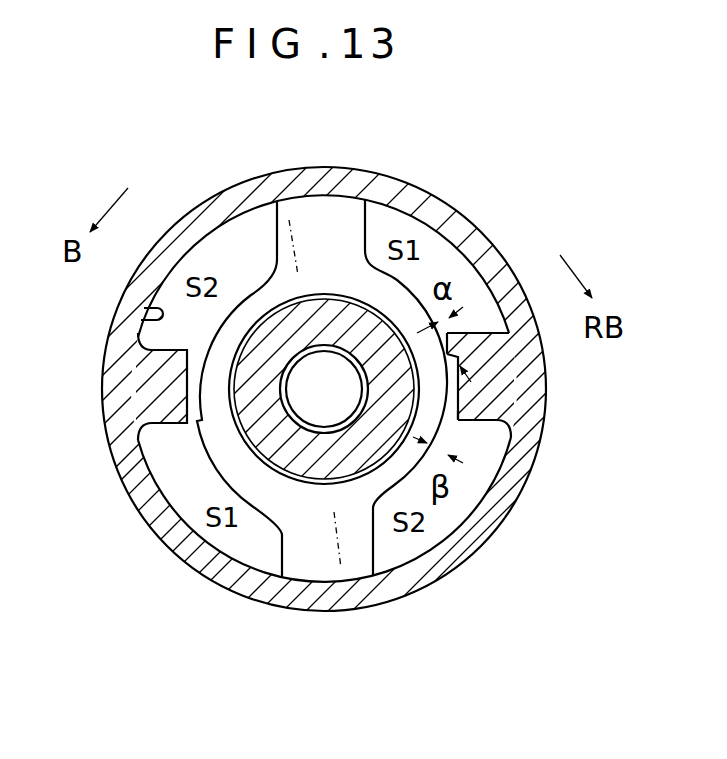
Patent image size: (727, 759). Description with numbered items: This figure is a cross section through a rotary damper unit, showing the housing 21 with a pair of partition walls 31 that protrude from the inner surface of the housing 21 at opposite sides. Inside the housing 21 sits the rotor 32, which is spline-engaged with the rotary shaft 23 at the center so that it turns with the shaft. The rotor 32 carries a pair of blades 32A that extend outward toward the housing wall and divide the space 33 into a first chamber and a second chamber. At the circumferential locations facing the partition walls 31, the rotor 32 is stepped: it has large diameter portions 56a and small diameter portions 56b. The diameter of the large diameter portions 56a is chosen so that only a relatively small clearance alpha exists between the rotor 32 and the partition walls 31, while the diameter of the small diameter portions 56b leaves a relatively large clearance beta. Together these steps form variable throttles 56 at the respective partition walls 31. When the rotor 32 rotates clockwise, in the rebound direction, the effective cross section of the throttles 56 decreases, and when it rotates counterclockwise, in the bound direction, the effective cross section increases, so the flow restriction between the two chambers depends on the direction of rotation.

The housing 21 is at (474, 242).
The rotary shaft 23 is at (273, 442).
The partition walls 31 is at (163, 408).
The rotor 32 is at (340, 278).
The blades 32A is at (298, 213).
The space 33 is at (160, 307).
The variable throttles 56 is at (461, 394).
The large diameter portions 56a is at (452, 336).
The small diameter portions 56b is at (480, 417).